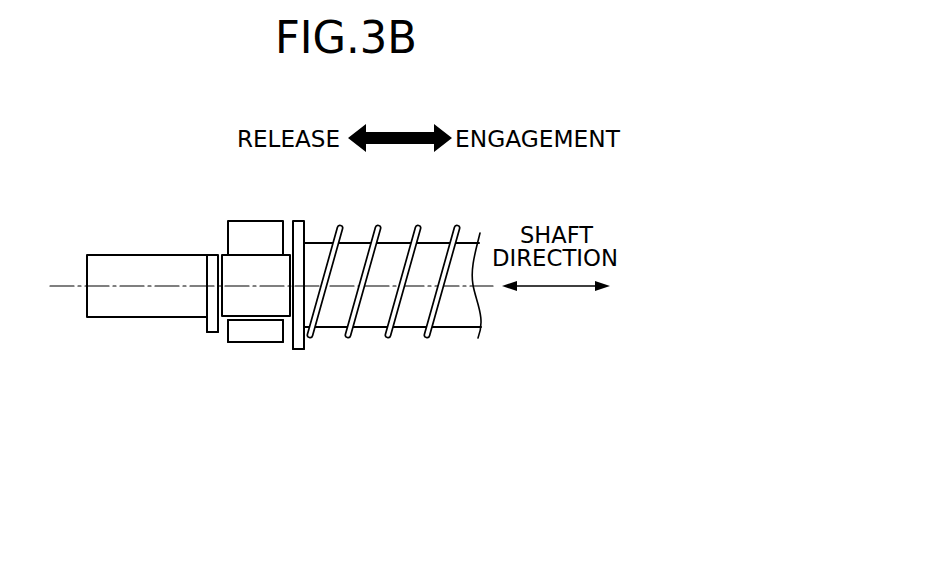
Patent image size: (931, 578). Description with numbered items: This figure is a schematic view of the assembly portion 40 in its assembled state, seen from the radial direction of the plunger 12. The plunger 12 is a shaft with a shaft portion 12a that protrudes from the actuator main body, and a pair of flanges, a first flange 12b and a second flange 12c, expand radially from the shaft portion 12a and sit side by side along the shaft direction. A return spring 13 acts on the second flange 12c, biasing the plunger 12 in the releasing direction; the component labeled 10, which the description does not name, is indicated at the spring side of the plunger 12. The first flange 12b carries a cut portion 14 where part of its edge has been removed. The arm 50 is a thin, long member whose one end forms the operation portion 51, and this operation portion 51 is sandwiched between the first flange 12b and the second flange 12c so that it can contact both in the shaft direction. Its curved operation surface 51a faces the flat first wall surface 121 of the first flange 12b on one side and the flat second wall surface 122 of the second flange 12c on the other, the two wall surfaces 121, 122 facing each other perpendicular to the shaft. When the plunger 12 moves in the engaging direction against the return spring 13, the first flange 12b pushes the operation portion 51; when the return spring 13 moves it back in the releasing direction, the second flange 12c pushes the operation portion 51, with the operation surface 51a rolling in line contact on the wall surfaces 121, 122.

The lead screw unit 10 is at (392, 295).
The plunger 12 is at (358, 237).
The shaft portion 12a is at (153, 252).
The first flange 12b is at (212, 335).
The second flange 12c is at (302, 350).
The return spring 13 is at (457, 227).
The cut portion 14 is at (212, 248).
The assembly portion 40 is at (260, 322).
The arm 50 is at (257, 216).
The operation portion 51 is at (258, 337).
The operation surface 51a is at (223, 336).
The first wall surface 121 is at (222, 336).
The second wall surface 122 is at (291, 346).